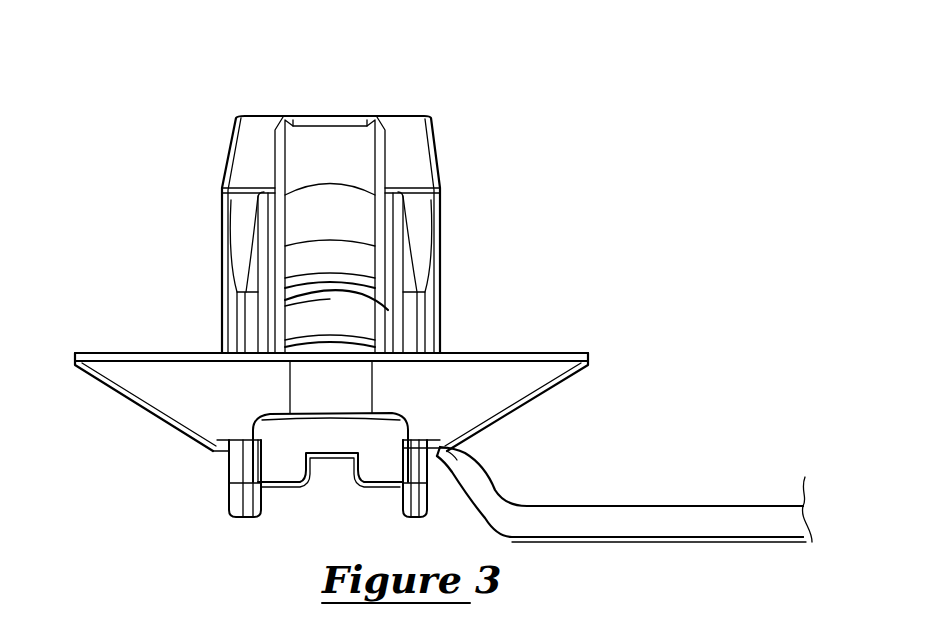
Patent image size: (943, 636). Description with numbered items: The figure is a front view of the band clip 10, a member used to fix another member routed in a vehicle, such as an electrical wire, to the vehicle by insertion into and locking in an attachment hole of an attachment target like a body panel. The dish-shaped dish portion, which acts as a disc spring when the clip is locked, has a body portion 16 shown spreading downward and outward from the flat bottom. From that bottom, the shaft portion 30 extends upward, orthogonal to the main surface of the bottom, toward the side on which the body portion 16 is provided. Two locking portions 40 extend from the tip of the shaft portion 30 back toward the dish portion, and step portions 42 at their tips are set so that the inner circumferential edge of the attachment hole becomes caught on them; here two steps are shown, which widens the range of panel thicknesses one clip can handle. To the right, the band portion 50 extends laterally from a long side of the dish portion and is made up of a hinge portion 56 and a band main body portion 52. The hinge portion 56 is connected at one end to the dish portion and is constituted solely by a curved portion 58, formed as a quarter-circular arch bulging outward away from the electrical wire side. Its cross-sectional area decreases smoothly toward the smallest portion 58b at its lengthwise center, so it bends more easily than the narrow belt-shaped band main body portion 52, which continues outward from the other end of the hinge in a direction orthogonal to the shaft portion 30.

The band clip 10 is at (139, 87).
The body portion 16 is at (160, 400).
The shaft portion 30 is at (410, 162).
The locking portion 40 is at (370, 226).
The step portion 42 is at (345, 309).
The band portion 50 is at (693, 437).
The band main body portion 52 is at (680, 518).
The hinge portion 56 is at (497, 487).
The curved portion 58 is at (541, 452).
The smallest portion 58b is at (465, 458).